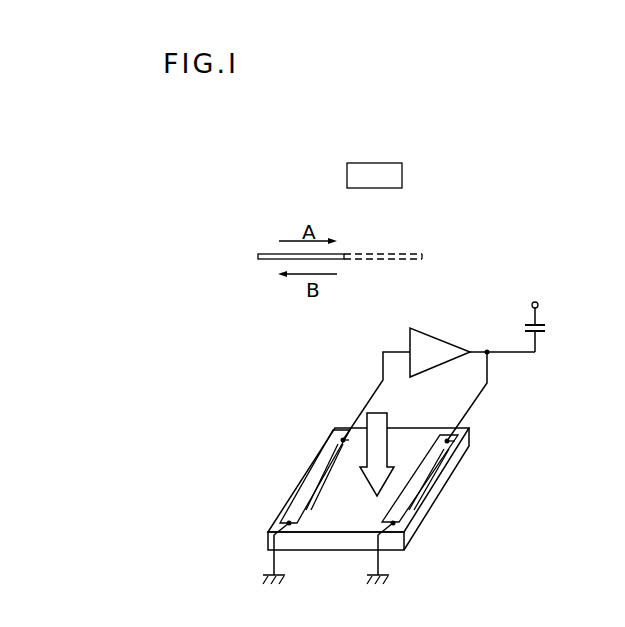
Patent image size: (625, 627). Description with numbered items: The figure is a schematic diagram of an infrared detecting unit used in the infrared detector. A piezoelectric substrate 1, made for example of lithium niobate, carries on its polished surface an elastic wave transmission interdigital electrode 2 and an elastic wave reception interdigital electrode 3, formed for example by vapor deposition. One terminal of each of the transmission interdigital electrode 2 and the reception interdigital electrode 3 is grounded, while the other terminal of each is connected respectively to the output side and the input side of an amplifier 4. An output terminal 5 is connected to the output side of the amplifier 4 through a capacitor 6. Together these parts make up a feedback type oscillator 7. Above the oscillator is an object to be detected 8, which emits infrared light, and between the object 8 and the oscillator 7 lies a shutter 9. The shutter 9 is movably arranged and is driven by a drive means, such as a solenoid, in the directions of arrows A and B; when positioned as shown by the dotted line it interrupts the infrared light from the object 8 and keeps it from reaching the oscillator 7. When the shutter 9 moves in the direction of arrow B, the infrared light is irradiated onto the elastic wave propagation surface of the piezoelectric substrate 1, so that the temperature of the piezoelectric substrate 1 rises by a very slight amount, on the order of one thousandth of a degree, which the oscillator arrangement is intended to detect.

The piezoelectric substrate 1 is at (452, 470).
The elastic wave transmission interdigital electrode 2 is at (450, 448).
The elastic wave reception interdigital electrode 3 is at (310, 480).
The amplifier 4 is at (432, 337).
The output terminal 5 is at (538, 303).
The capacitor 6 is at (548, 330).
The feedback type oscillator 7 is at (492, 409).
The object to be detected 8 is at (398, 176).
The shutter 9 is at (272, 254).